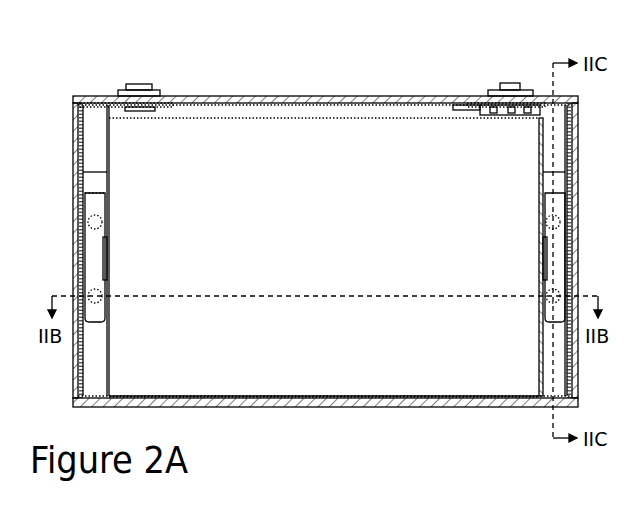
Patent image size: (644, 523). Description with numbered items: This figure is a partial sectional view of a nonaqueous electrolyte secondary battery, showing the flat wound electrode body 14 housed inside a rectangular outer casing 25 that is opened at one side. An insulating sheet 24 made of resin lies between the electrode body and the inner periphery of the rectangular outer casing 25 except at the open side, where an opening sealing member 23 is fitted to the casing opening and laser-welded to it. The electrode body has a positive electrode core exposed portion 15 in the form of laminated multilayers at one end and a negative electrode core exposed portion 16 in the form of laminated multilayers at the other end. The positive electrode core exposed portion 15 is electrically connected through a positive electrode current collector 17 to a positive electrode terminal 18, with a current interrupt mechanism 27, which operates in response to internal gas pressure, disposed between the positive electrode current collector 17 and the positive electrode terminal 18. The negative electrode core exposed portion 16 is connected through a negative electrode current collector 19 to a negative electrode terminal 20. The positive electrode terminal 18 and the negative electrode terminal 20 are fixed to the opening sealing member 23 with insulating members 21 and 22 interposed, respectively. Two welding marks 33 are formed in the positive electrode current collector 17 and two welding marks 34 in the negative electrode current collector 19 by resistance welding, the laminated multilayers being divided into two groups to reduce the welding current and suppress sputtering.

The flat wound electrode body 14 is at (345, 368).
The positive electrode core exposed portion 15 is at (558, 372).
The negative electrode core exposed portion 16 is at (95, 378).
The positive electrode current collector 17 is at (560, 165).
The positive electrode terminal 18 is at (506, 86).
The negative electrode current collector 19 is at (95, 203).
The negative electrode terminal 20 is at (136, 86).
The insulating member 21 is at (486, 100).
The insulating member 22 is at (160, 98).
The opening sealing member 23 is at (360, 100).
The insulating sheet 24 is at (405, 403).
The rectangular outer casing 25 is at (488, 405).
The current interrupt mechanism 27 is at (500, 114).
The welding marks 33 is at (548, 290).
The welding marks 34 is at (100, 228).